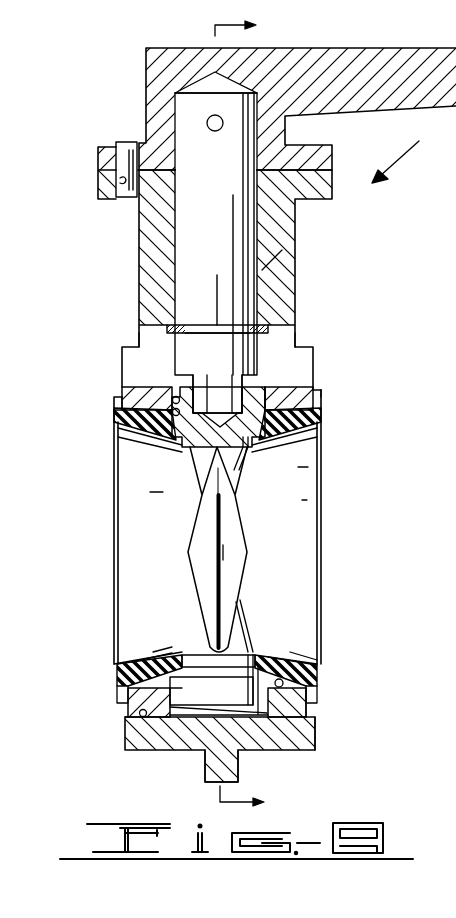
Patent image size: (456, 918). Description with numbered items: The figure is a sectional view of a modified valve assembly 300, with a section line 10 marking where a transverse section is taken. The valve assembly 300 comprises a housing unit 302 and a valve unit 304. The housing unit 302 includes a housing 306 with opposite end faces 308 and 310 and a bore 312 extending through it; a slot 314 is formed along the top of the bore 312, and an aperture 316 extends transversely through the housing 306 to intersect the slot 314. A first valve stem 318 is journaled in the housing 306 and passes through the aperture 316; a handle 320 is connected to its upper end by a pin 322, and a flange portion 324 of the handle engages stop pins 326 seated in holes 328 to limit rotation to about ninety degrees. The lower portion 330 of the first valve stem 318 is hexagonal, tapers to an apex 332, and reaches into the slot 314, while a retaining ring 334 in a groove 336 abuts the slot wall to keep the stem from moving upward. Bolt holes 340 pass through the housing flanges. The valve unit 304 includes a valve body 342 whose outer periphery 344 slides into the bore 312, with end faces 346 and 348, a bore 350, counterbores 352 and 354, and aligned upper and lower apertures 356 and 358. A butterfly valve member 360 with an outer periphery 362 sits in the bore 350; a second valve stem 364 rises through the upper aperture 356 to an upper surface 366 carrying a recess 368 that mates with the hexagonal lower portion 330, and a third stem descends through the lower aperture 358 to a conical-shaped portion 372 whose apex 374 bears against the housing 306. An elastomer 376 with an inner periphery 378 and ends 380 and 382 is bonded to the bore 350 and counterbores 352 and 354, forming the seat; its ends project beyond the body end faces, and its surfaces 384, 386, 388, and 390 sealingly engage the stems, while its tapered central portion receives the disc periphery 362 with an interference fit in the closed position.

The section line 10 is at (253, 415).
The valve assembly 300 is at (414, 156).
The housing unit 302 is at (296, 259).
The valve unit 304 is at (314, 391).
The housing 306 is at (277, 290).
The end face 308 is at (125, 743).
The end face 310 is at (318, 740).
The bore 312 is at (127, 720).
The slot 314 is at (130, 353).
The aperture 316 is at (182, 240).
The first valve stem 318 is at (182, 210).
The handle 320 is at (353, 58).
The pin 322 is at (207, 122).
The flange portion 324 is at (100, 147).
The stop pins 326 is at (119, 162).
The holes 328 is at (116, 182).
The lower portion 330 is at (223, 390).
The apex 332 is at (246, 455).
The retaining ring 334 is at (167, 332).
The groove 336 is at (201, 326).
The bolt holes 340 is at (388, 385).
The valve body 342 is at (283, 706).
The outer periphery 344 is at (135, 385).
The end face 346 is at (125, 710).
The end face 348 is at (318, 708).
The bore 350 is at (318, 725).
The counterbore 352 is at (120, 692).
The counterbore 354 is at (320, 692).
The upper aperture 356 is at (125, 399).
The lower aperture 358 is at (195, 716).
The butterfly valve member 360 is at (233, 533).
The outer periphery 362 is at (220, 505).
The second valve stem 364 is at (287, 387).
The upper surface 366 is at (178, 387).
The recess 368 is at (200, 385).
The conical-shaped portion 372 is at (226, 708).
The apex 374 is at (208, 755).
The elastomer 376 is at (172, 652).
The inner periphery 378 is at (128, 640).
The end 380 is at (117, 680).
The end 382 is at (320, 677).
The sealing surface 384 is at (190, 448).
The sealing surface 386 is at (127, 417).
The sealing surface 388 is at (186, 661).
The sealing surface 390 is at (176, 681).